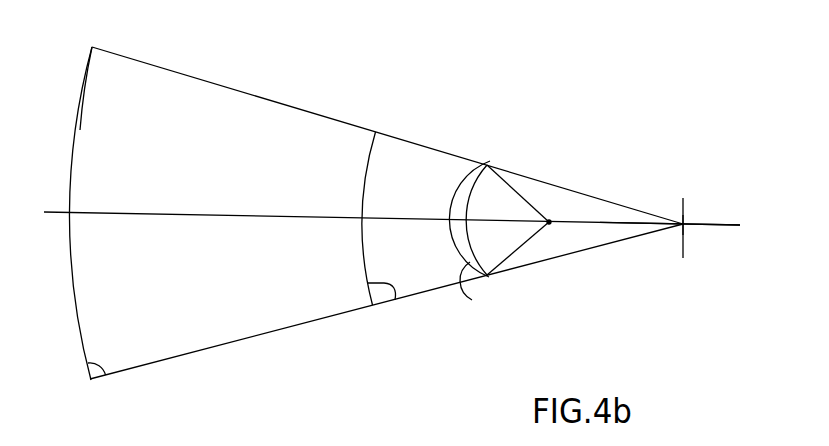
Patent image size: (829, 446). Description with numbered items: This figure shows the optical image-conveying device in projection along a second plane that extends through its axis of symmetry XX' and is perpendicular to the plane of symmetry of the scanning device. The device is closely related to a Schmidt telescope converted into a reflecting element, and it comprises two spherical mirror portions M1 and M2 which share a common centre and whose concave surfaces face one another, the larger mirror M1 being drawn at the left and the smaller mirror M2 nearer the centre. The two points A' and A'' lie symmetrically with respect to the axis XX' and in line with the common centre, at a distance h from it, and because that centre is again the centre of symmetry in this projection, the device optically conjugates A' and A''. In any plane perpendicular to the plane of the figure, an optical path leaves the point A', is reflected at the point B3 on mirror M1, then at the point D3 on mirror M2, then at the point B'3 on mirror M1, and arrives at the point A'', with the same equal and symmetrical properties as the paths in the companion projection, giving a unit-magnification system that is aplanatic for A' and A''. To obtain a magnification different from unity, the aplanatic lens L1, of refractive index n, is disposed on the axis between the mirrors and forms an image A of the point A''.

The axis of symmetry X is at (383, 211).
The axis of symmetry X' is at (686, 224).
The reflection point on mirror M1 B3 is at (80, 42).
The reflection point on mirror M1 B'3 is at (68, 88).
The reflection point on mirror M2 D3 is at (393, 130).
The spherical mirror portion M1 is at (90, 389).
The spherical mirror portion M2 is at (384, 309).
The aplanatic lens L1 is at (474, 240).
The image formed by lens L1 A is at (522, 220).
The object point A' is at (697, 200).
The image point A'' is at (700, 241).